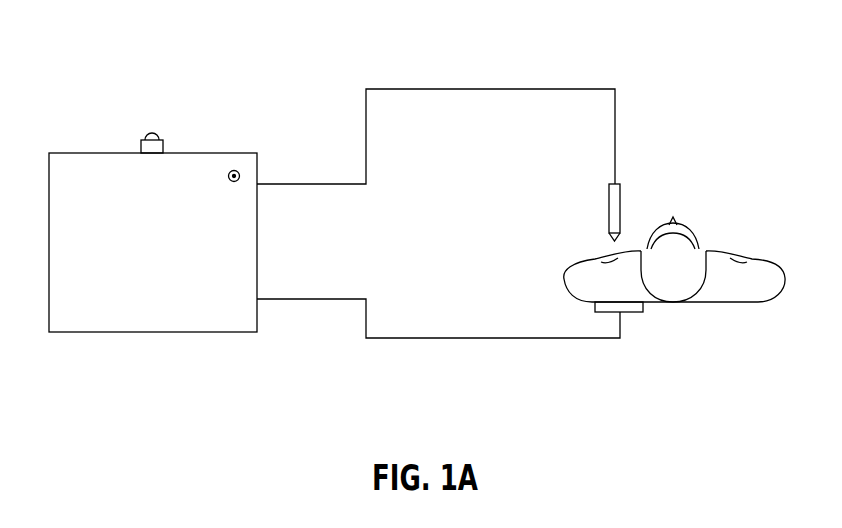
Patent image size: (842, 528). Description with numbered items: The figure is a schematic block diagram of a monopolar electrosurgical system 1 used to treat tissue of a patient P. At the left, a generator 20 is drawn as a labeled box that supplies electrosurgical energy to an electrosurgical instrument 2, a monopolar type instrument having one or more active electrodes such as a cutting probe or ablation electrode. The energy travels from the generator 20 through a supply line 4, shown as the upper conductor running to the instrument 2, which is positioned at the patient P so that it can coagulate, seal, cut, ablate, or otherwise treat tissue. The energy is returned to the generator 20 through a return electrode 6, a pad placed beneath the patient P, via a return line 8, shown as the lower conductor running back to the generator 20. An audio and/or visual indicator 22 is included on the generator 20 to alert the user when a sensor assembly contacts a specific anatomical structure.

The monopolar electrosurgical system 1 is at (247, 55).
The generator 20 is at (80, 153).
The audio and/or visual indicator 22 is at (165, 150).
The supply line 4 is at (490, 89).
The electrosurgical instrument 2 is at (609, 214).
The return line 8 is at (506, 338).
The return electrode 6 is at (634, 312).
The patient P is at (751, 239).